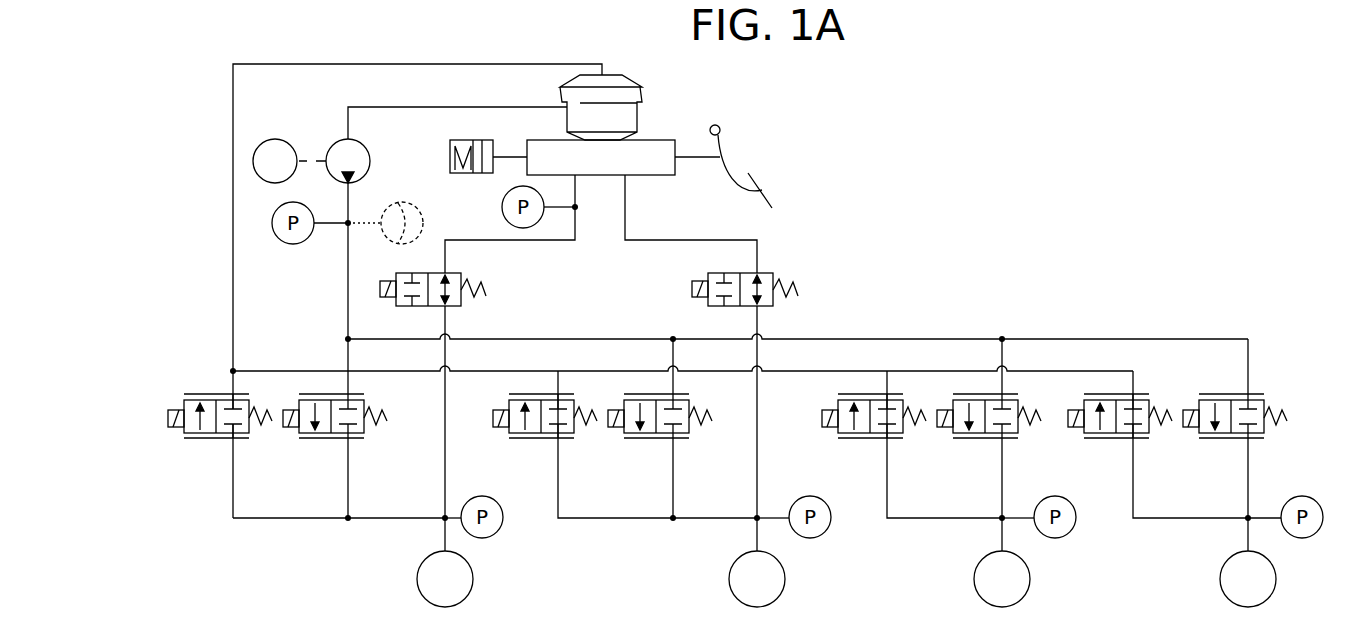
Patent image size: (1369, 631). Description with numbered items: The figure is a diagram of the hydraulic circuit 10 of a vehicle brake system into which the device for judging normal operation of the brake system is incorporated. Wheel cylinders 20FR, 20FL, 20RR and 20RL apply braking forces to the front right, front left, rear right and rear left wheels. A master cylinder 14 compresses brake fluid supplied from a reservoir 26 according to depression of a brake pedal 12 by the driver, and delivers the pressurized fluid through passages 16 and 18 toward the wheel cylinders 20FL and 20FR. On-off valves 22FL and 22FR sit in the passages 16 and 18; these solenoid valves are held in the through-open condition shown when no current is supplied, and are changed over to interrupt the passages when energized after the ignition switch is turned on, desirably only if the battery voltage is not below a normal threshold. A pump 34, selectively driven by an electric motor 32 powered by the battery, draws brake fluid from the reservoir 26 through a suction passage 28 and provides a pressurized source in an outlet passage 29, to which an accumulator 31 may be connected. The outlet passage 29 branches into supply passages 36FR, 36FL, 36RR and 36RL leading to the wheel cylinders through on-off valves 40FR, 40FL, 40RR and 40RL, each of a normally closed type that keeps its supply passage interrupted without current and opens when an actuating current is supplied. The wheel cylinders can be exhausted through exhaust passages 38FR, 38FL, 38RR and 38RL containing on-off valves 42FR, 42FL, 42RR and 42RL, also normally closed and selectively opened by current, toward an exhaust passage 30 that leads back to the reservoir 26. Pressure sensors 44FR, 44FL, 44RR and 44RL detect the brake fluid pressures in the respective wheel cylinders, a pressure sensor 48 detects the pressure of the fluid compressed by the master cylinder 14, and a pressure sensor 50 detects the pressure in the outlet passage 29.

The hydraulic circuit 10 is at (899, 204).
The brake pedal 12 is at (773, 193).
The master cylinder 14 is at (608, 176).
The passage 16 is at (692, 239).
The passage 18 is at (552, 241).
The wheel cylinder 20FR is at (417, 580).
The wheel cylinder 20FL is at (729, 580).
The wheel cylinder 20RR is at (974, 581).
The wheel cylinder 20RL is at (1220, 581).
The on-off valve 22FR is at (460, 308).
The on-off valve 22FL is at (766, 272).
The reservoir 26 is at (643, 88).
The suction passage 28 is at (383, 107).
The outlet passage 29 is at (347, 268).
The exhaust passage 30 is at (233, 140).
The accumulator 31 is at (406, 247).
The electric motor 32 is at (274, 139).
The pump 34 is at (364, 176).
The supply passage 36FR is at (348, 379).
The supply passage 36FL is at (676, 380).
The supply passage 36RR is at (1004, 380).
The supply passage 36RL is at (1249, 360).
The exhaust passage 38FR is at (275, 519).
The exhaust passage 38FL is at (603, 519).
The exhaust passage 38RR is at (917, 519).
The exhaust passage 38RL is at (1165, 519).
The on-off valve 40FR is at (324, 441).
The on-off valve 40FL is at (650, 441).
The on-off valve 40RR is at (975, 441).
The on-off valve 40RL is at (1255, 441).
The on-off valve 42FR is at (210, 441).
The on-off valve 42FL is at (536, 441).
The on-off valve 42RR is at (862, 441).
The on-off valve 42RL is at (1143, 441).
The pressure sensor 44FR is at (503, 520).
The pressure sensor 44FL is at (831, 520).
The pressure sensor 44RR is at (1076, 520).
The pressure sensor 44RL is at (1305, 538).
The pressure sensor 48 is at (503, 199).
The pressure sensor 50 is at (280, 243).